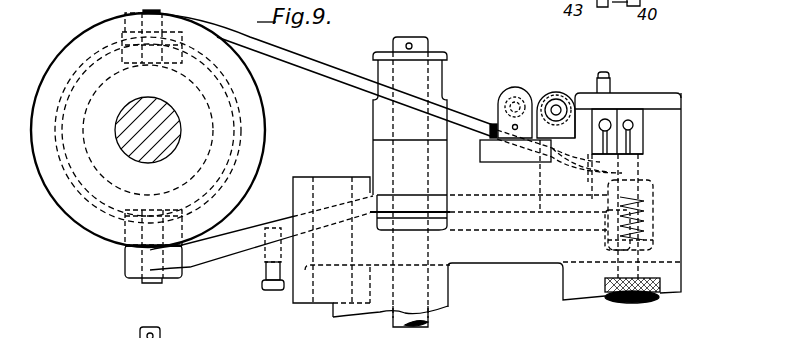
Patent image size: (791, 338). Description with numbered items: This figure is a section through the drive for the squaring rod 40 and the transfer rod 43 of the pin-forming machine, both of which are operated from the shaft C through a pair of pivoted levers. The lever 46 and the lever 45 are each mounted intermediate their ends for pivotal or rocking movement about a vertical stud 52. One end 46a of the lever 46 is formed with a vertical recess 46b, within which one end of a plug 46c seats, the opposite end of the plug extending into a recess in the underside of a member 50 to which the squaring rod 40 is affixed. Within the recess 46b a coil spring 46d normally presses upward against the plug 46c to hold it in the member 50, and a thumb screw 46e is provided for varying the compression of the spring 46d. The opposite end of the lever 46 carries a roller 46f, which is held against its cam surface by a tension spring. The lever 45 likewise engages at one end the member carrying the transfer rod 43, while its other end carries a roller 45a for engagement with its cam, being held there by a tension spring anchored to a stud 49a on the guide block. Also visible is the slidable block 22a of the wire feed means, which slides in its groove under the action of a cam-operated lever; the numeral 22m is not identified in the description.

The shaft C is at (128, 113).
The roller 45a is at (120, 51).
The pivoted lever 45 is at (323, 69).
The vertical stud 52 is at (430, 45).
The slidable block 22a is at (503, 117).
The pivot 22m is at (548, 70).
The stud 49a is at (597, 78).
The transfer rod 43 is at (606, 119).
The squaring rod 40 is at (631, 120).
The member 50 is at (636, 147).
The plug 46c is at (637, 173).
The vertical recess 46b is at (647, 203).
The end of lever 46a is at (655, 219).
The coil spring 46d is at (650, 240).
The thumb screw 46e is at (650, 301).
The roller 46f is at (123, 231).
The pivoted lever 46 is at (237, 247).